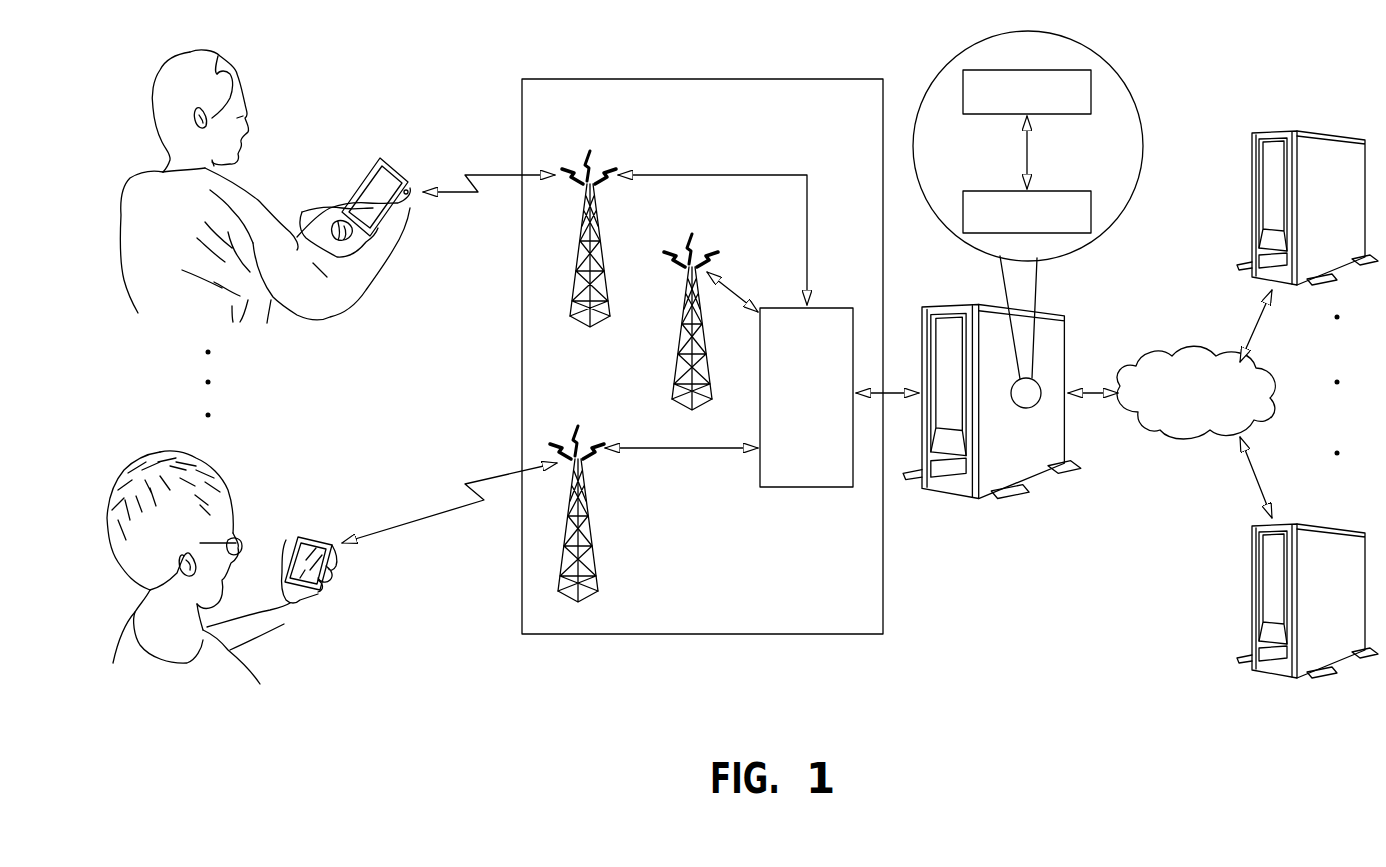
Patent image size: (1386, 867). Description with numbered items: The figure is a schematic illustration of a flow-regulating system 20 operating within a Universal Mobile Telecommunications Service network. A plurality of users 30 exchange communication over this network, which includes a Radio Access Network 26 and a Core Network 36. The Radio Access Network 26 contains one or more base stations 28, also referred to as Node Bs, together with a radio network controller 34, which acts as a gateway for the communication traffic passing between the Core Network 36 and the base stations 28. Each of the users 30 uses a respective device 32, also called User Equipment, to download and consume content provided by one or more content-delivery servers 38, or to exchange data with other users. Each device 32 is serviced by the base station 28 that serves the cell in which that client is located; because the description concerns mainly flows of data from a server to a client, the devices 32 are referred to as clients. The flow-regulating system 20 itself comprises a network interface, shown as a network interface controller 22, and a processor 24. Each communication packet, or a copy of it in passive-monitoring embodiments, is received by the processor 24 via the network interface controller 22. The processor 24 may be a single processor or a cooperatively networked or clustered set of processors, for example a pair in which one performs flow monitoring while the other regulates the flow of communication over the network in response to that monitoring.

The flow-regulating system 20 is at (1086, 318).
The network interface controller 22 is at (1059, 114).
The processor 24 is at (993, 190).
The Radio Access Network 26 is at (618, 636).
The base station 28 is at (562, 548).
The user 30 is at (119, 482).
The device 32 is at (360, 182).
The radio network controller 34 is at (804, 487).
The Core Network 36 is at (1150, 428).
The content-delivery server 38 is at (1272, 130).